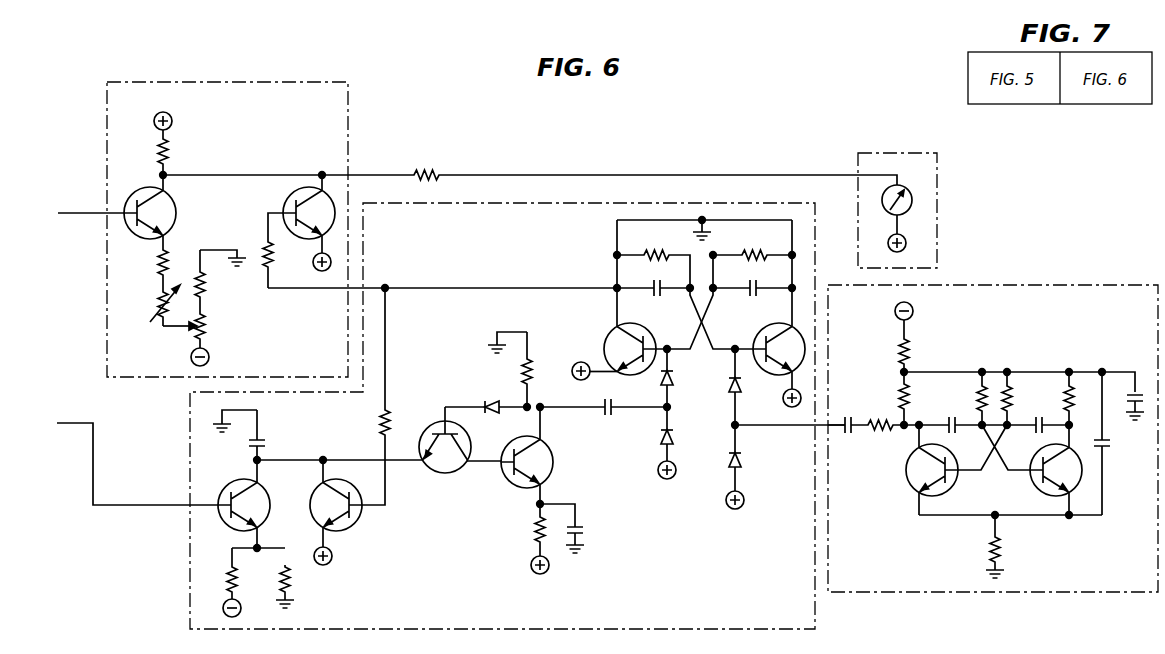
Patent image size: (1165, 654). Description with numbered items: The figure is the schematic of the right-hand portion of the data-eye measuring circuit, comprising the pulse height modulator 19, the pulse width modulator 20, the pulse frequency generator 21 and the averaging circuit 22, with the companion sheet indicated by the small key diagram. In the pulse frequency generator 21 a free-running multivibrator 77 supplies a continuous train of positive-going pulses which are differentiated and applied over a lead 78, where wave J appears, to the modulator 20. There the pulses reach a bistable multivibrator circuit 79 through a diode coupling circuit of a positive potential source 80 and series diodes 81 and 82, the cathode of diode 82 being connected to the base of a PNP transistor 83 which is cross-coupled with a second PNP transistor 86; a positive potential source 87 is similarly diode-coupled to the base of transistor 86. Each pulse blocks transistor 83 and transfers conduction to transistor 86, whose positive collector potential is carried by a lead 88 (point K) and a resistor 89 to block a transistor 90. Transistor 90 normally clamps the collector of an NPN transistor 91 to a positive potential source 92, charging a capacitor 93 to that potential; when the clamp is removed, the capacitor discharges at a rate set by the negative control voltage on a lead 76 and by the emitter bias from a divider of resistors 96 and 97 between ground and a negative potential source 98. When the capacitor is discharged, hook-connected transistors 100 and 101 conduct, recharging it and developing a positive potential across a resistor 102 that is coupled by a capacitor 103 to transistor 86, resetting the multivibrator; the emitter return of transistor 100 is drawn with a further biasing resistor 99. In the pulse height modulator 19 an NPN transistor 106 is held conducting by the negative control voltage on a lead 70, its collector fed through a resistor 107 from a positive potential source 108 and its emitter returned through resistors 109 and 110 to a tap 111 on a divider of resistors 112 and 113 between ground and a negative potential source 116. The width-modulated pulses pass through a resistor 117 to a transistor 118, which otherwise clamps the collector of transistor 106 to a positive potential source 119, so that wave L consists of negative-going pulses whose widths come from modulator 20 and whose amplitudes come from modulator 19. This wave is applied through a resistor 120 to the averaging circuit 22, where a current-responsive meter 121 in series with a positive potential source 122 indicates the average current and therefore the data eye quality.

The pulse height modulator 19 is at (278, 82).
The pulse width modulator 20 is at (190, 578).
The pulse frequency generator 21 is at (927, 592).
The averaging circuit 22 is at (876, 153).
The lead 70 is at (80, 213).
The lead 76 is at (79, 423).
The free-running multivibrator 77 is at (1010, 499).
The lead 78 is at (840, 428).
The bistable multivibrator circuit 79 is at (707, 396).
The positive potential source 80 is at (744, 503).
The diode 81 is at (744, 460).
The diode 82 is at (727, 387).
The transistor 83 is at (765, 330).
The transistor 86 is at (607, 336).
The positive potential source 87 is at (663, 479).
The lead 88 is at (530, 287).
The resistor 89 is at (380, 417).
The transistor 90 is at (360, 517).
The NPN transistor 91 is at (234, 481).
The positive potential source 92 is at (332, 557).
The capacitor 93 is at (272, 440).
The resistor 96 is at (228, 573).
The resistor 97 is at (294, 578).
The negative potential source 98 is at (240, 612).
The resistor 99 is at (530, 566).
The hook-connected transistor 100 is at (557, 466).
The hook-connected transistor 101 is at (445, 474).
The resistor 102 is at (518, 374).
The capacitor 103 is at (613, 415).
The NPN transistor 106 is at (177, 211).
The resistor 107 is at (155, 150).
The positive potential source 108 is at (156, 113).
The resistor 109 is at (158, 265).
The resistor 110 is at (152, 318).
The tap 111 is at (188, 330).
The resistor 112 is at (210, 318).
The resistor 113 is at (210, 289).
The negative potential source 116 is at (210, 357).
The resistor 117 is at (262, 247).
The transistor 118 is at (293, 197).
The positive potential source 119 is at (312, 266).
The resistor 120 is at (426, 170).
The current-responsive meter 121 is at (912, 200).
The positive potential source 122 is at (906, 243).
The junction K is at (385, 285).
The wave L is at (600, 173).
The wave J is at (770, 428).